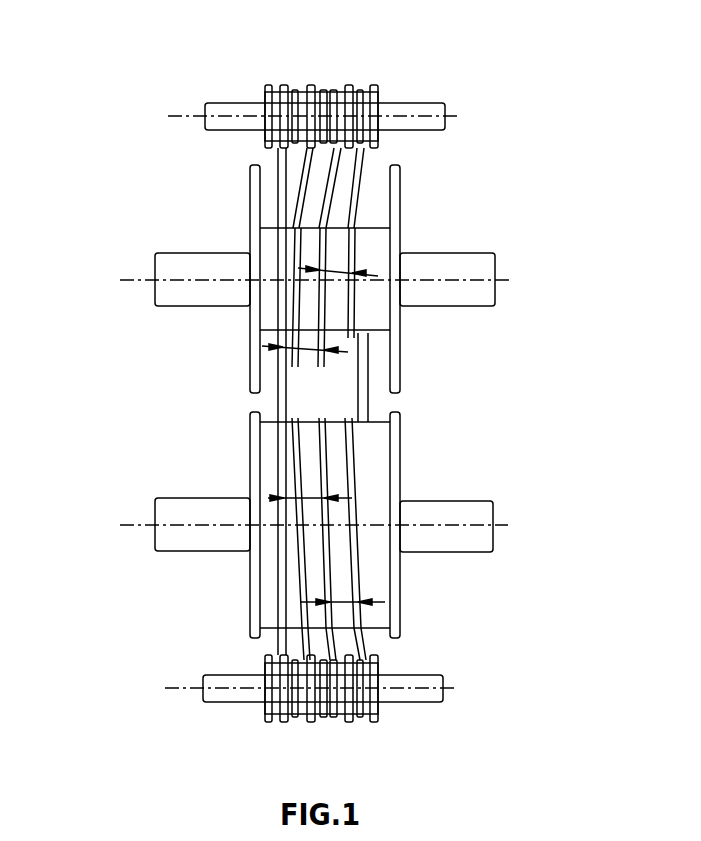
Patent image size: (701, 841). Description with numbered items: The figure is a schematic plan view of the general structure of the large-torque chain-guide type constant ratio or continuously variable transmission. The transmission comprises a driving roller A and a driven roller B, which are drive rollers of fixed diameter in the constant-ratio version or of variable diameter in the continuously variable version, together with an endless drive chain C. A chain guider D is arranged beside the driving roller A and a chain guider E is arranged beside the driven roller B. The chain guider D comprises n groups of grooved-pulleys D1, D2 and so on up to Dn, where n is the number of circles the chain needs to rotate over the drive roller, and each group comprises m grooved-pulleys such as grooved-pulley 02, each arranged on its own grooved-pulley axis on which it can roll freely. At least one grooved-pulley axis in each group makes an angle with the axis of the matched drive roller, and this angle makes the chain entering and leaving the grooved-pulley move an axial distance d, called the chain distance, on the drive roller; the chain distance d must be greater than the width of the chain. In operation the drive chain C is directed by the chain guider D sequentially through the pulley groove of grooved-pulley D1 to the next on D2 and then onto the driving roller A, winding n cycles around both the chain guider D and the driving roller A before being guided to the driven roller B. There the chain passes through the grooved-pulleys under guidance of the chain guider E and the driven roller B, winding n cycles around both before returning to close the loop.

The chain guider D is at (365, 74).
The grooved-pulley D1 is at (268, 85).
The grooved-pulley D2 is at (296, 85).
The grooved-pulley Dn is at (371, 88).
The driving roller A is at (252, 225).
The grooved-pulley 02 is at (434, 265).
The driven roller B is at (250, 480).
The drive chain C is at (282, 643).
The chain guider E is at (420, 698).
The chain distance d is at (323, 435).